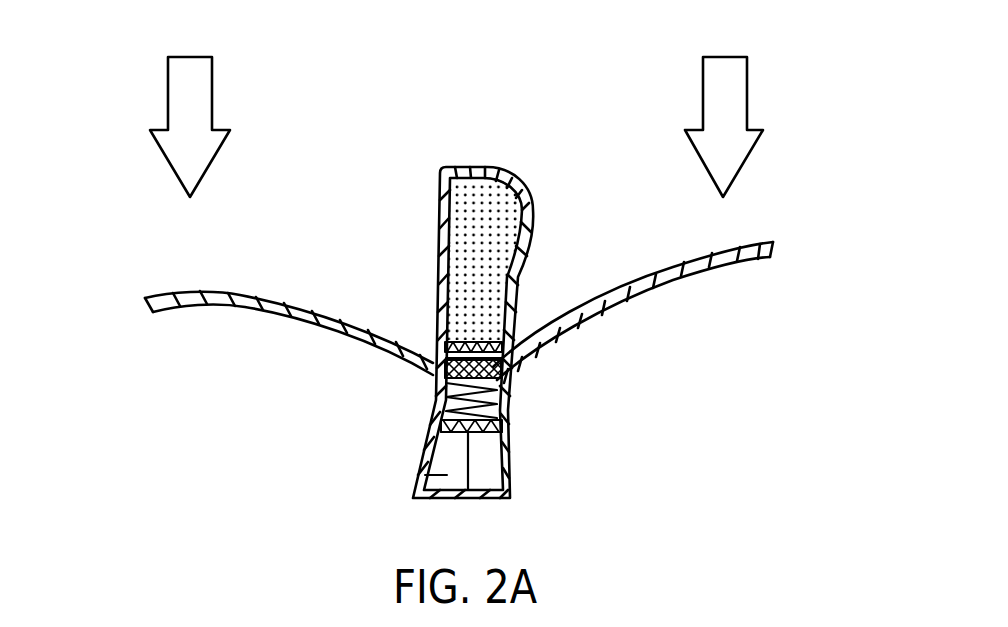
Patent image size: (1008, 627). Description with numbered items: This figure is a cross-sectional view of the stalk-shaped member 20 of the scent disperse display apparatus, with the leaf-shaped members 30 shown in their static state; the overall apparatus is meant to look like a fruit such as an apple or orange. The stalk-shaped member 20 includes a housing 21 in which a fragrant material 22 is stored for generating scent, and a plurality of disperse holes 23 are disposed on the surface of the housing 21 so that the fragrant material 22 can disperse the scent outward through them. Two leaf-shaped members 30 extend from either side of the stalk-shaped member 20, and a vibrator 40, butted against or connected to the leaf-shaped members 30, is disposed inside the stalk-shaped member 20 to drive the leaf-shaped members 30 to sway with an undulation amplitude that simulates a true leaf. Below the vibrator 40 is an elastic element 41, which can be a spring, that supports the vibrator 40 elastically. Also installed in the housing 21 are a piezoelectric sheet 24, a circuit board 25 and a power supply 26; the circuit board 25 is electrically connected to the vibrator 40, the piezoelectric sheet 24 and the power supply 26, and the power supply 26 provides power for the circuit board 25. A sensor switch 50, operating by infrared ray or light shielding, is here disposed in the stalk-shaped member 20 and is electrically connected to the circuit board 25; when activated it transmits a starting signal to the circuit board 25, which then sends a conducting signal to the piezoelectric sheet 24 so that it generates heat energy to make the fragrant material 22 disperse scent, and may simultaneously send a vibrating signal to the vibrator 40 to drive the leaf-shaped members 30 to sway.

The stalk-shaped member 20 is at (480, 283).
The housing 21 is at (546, 240).
The fragrant material 22 is at (462, 277).
The disperse holes 23 is at (503, 167).
The piezoelectric sheet 24 is at (505, 320).
The circuit board 25 is at (510, 419).
The power supply 26 is at (487, 478).
The leaf-shaped members 30 is at (250, 294).
The vibrator 40 is at (430, 372).
The elastic element 41 is at (517, 385).
The sensor switch 50 is at (447, 475).